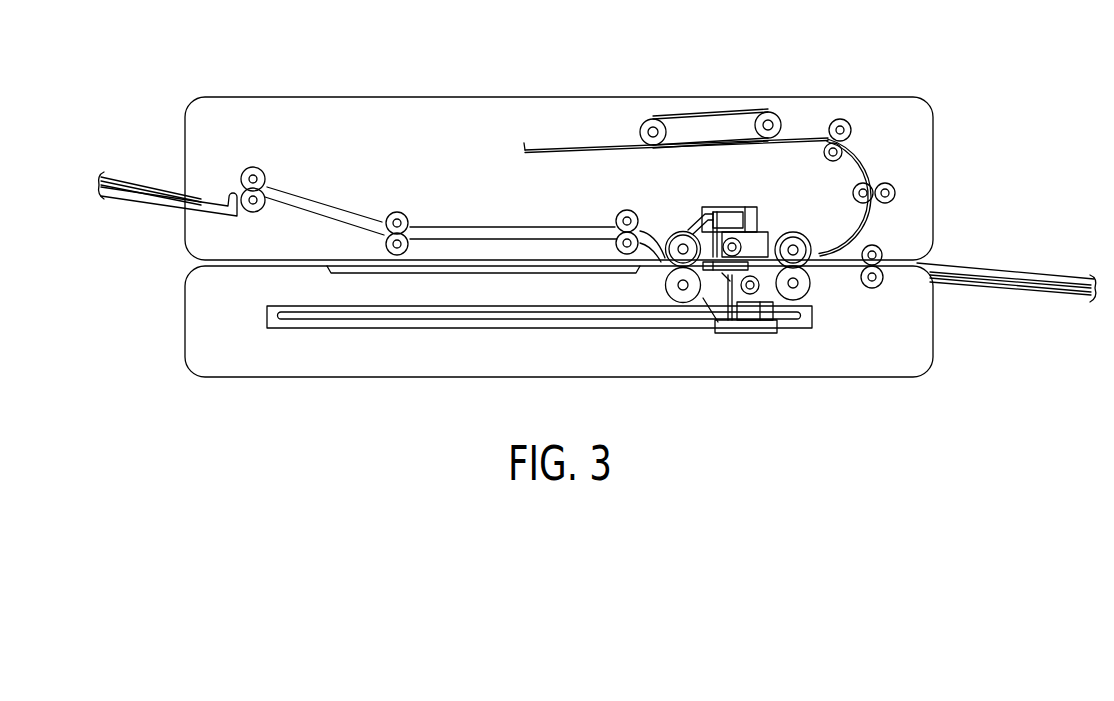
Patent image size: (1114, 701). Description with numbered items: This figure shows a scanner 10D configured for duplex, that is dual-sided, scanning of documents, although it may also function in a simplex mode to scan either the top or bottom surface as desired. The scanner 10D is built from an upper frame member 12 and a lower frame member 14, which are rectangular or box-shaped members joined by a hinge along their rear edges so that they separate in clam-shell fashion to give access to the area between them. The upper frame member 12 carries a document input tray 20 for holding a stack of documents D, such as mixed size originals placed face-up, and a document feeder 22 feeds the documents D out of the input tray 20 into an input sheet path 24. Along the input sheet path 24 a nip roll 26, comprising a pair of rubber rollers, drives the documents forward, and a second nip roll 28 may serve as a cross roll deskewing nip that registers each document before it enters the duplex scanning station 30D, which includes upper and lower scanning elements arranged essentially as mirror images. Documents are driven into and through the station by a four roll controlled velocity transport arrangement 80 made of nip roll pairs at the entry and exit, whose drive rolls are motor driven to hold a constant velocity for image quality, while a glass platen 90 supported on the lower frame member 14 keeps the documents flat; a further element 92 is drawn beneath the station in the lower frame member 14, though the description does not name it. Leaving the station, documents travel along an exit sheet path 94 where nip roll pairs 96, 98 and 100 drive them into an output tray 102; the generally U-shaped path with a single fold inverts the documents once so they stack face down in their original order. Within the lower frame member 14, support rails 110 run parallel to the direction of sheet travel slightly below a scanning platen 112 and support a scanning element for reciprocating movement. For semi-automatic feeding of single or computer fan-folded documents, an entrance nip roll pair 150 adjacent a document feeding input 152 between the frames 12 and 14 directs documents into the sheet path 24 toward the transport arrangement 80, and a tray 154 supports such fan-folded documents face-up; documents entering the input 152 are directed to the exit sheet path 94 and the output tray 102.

The scanner 10D is at (586, 201).
The upper frame member 12 is at (933, 160).
The lower frame member 14 is at (933, 348).
The document input tray 20 is at (522, 149).
The document feeder 22 is at (710, 116).
The input sheet path 24 is at (803, 130).
The nip roll 26 is at (852, 127).
The second nip roll 28 is at (887, 183).
The duplex scanning station 30D is at (730, 207).
The controlled velocity transport arrangement 80 is at (790, 223).
The glass platen 90 is at (713, 264).
The lower roller 92 is at (752, 270).
The exit sheet path 94 is at (640, 232).
The nip roll pair 96 is at (616, 218).
The nip roll pair 98 is at (397, 211).
The nip roll pair 100 is at (253, 166).
The output tray 102 is at (162, 206).
The support rails 110 is at (293, 328).
The scanning platen 112 is at (357, 268).
The entrance nip roll pair 150 is at (882, 250).
The document feeding input 152 is at (928, 261).
The tray 154 is at (1005, 290).
The documents D is at (1005, 266).